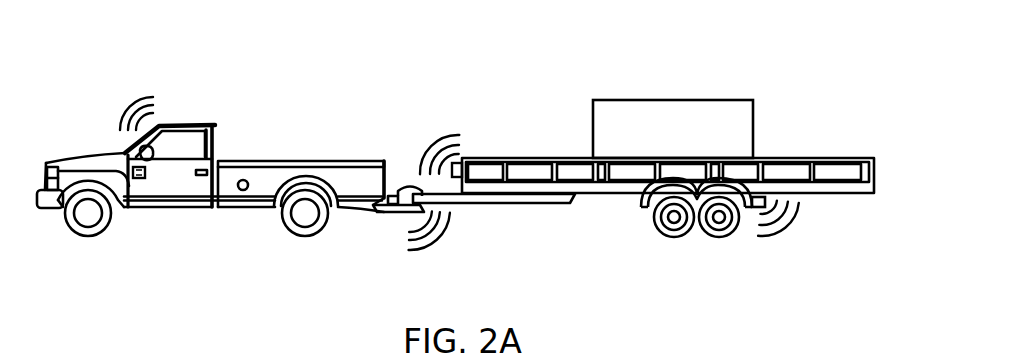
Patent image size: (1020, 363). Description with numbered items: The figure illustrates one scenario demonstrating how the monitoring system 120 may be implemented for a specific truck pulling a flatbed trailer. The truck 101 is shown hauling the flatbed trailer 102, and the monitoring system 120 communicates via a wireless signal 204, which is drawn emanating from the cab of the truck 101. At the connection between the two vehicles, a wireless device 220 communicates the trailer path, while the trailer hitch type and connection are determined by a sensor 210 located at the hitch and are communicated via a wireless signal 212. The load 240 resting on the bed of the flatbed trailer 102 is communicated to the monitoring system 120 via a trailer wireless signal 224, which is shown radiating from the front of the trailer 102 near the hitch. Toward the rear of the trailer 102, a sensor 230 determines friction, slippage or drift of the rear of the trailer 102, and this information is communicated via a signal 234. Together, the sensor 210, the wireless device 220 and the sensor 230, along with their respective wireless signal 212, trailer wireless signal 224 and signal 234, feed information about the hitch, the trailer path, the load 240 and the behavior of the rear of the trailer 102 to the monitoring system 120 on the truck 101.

The truck 101 is at (265, 173).
The flatbed trailer 102 is at (836, 157).
The monitoring system 120 is at (143, 180).
The wireless signal 204 is at (127, 99).
The sensor 210 is at (400, 208).
The wireless signal 212 is at (452, 227).
The wireless device 220 is at (460, 178).
The trailer wireless signal 224 is at (428, 137).
The sensor 230 is at (755, 207).
The signal 234 is at (790, 222).
The load 240 is at (714, 122).